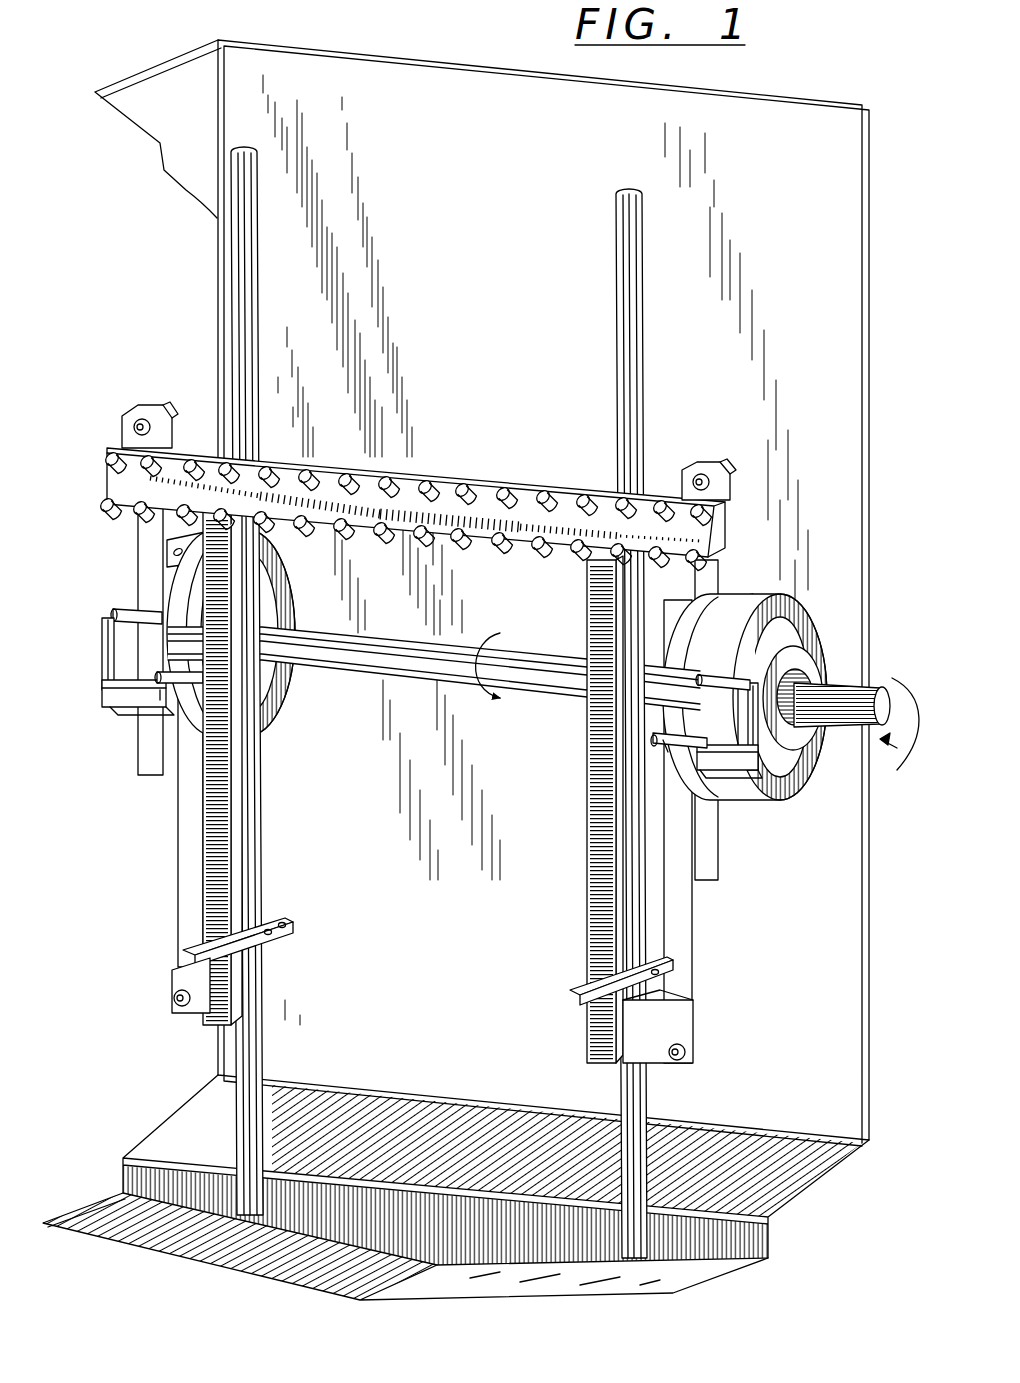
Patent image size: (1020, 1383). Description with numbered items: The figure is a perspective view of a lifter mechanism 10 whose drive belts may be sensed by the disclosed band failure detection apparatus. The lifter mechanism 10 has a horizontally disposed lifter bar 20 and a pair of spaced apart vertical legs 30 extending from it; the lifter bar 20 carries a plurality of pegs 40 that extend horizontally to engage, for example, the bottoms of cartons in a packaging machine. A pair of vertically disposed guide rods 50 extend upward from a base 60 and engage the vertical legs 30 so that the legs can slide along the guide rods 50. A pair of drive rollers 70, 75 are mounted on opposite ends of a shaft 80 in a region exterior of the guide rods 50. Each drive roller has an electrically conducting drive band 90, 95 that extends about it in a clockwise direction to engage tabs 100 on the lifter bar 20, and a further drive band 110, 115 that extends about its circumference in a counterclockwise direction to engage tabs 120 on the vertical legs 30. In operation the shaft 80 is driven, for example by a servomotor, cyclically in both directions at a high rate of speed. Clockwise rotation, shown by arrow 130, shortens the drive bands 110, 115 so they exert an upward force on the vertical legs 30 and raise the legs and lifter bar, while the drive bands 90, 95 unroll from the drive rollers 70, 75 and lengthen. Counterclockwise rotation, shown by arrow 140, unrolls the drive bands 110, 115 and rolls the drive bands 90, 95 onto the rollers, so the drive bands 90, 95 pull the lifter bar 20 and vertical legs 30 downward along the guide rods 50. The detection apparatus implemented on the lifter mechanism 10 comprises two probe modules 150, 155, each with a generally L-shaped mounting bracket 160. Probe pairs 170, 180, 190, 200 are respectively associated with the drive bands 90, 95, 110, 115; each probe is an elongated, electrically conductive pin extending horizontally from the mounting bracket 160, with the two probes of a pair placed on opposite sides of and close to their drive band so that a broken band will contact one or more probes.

The lifter mechanism 10 is at (90, 885).
The lifter bar 20 is at (455, 470).
The vertical legs 30 is at (218, 600).
The pegs 40 is at (548, 484).
The guide rods 50 is at (248, 298).
The base 60 is at (466, 1244).
The drive roller 70 is at (273, 677).
The drive roller 75 is at (793, 625).
The shaft 80 is at (405, 660).
The drive band 90 is at (140, 535).
The drive band 95 is at (710, 582).
The tabs 100 is at (172, 408).
The further drive band 110 is at (188, 800).
The further drive band 115 is at (683, 932).
The tabs 120 is at (178, 978).
The arrow 130 is at (898, 744).
The arrow 140 is at (500, 633).
The probe module 150 is at (98, 638).
The probe module 155 is at (777, 763).
The L-shaped mounting bracket 160 is at (108, 703).
The probe pair 170 is at (116, 605).
The probe pair 180 is at (166, 706).
The probe pair 190 is at (748, 674).
The probe pair 200 is at (680, 742).